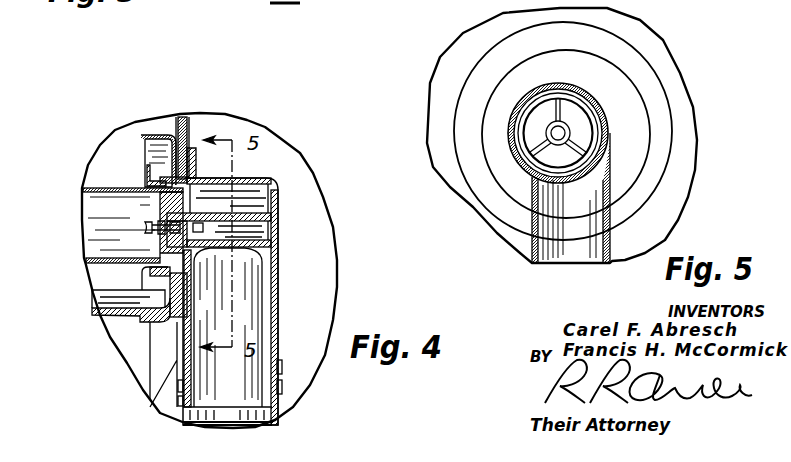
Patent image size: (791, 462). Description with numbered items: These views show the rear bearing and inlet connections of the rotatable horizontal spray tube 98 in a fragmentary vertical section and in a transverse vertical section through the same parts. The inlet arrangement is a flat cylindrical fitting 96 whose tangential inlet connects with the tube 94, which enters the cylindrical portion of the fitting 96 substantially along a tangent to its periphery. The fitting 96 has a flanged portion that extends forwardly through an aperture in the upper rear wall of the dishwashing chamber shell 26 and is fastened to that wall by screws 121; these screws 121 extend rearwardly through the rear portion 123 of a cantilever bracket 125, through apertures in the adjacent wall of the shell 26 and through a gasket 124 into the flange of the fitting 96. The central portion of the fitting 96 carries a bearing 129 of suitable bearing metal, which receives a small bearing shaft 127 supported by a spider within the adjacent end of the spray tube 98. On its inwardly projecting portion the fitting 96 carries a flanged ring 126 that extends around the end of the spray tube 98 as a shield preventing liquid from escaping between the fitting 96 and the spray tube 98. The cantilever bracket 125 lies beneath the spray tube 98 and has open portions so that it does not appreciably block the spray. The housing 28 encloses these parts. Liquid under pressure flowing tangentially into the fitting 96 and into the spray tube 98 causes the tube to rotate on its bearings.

In FIG. 4, the dishwashing chamber shell 26 is at (158, 383).
In FIG. 5, the dishwashing chamber shell 26 is at (449, 190).
In FIG. 4, the housing 28 is at (122, 332).
In FIG. 4, the tube 94 is at (283, 413).
In FIG. 4, the fitting 96 is at (278, 260).
In FIG. 5, the fitting 96 is at (610, 160).
In FIG. 4, the spray tube 98 is at (97, 188).
In FIG. 4, the screws 121 is at (157, 300).
In FIG. 4, the rear portion of cantilever bracket 123 is at (158, 135).
In FIG. 4, the gasket 124 is at (190, 120).
In FIG. 5, the gasket 124 is at (502, 213).
In FIG. 4, the cantilever bracket 125 is at (160, 296).
In FIG. 4, the flanged ring 126 is at (140, 205).
In FIG. 5, the flanged ring 126 is at (573, 97).
In FIG. 4, the bearing shaft 127 is at (145, 228).
In FIG. 4, the bearing 129 is at (197, 188).